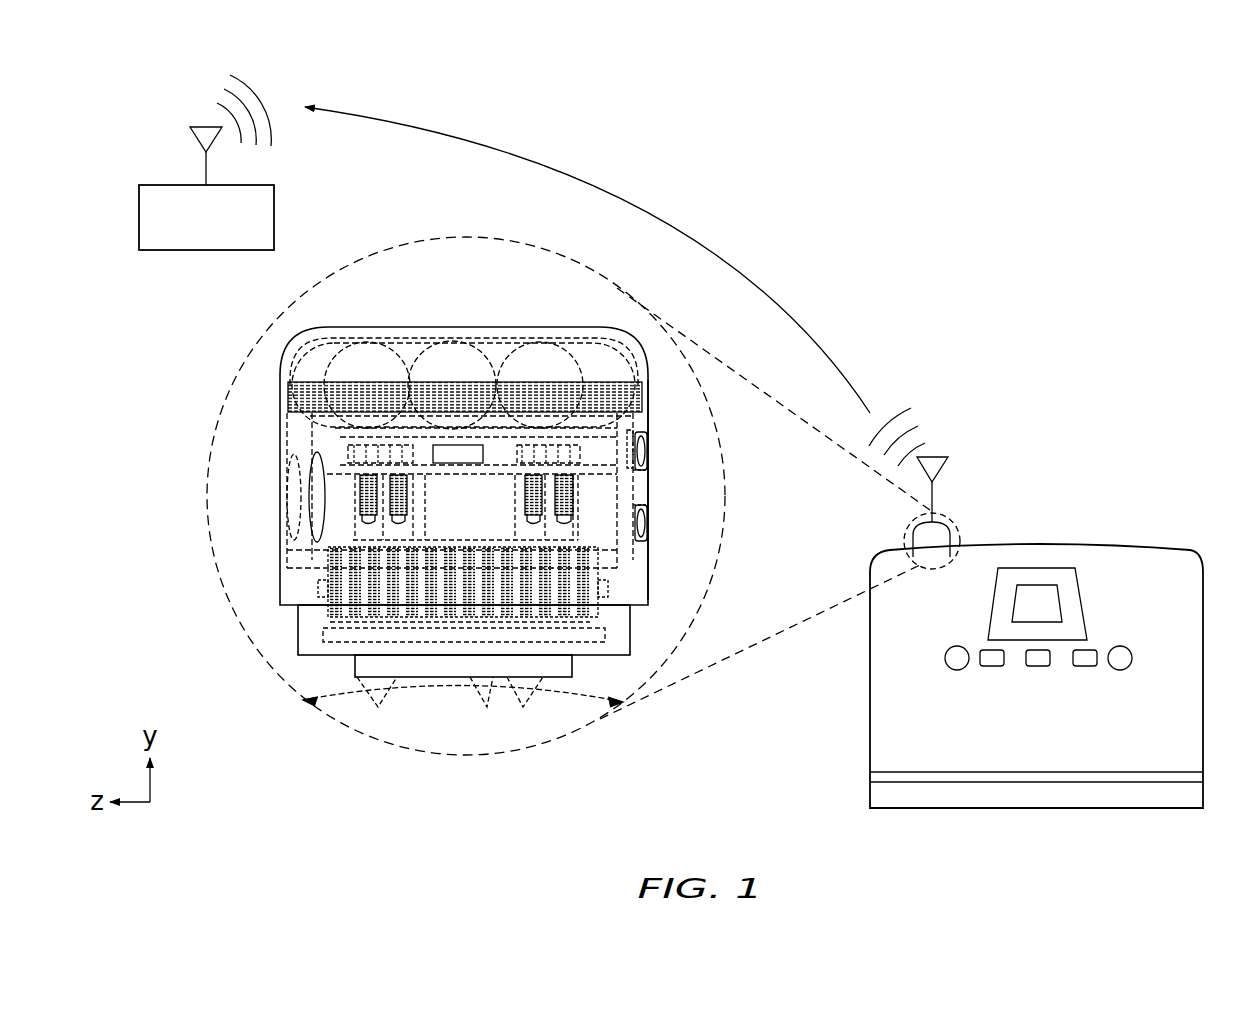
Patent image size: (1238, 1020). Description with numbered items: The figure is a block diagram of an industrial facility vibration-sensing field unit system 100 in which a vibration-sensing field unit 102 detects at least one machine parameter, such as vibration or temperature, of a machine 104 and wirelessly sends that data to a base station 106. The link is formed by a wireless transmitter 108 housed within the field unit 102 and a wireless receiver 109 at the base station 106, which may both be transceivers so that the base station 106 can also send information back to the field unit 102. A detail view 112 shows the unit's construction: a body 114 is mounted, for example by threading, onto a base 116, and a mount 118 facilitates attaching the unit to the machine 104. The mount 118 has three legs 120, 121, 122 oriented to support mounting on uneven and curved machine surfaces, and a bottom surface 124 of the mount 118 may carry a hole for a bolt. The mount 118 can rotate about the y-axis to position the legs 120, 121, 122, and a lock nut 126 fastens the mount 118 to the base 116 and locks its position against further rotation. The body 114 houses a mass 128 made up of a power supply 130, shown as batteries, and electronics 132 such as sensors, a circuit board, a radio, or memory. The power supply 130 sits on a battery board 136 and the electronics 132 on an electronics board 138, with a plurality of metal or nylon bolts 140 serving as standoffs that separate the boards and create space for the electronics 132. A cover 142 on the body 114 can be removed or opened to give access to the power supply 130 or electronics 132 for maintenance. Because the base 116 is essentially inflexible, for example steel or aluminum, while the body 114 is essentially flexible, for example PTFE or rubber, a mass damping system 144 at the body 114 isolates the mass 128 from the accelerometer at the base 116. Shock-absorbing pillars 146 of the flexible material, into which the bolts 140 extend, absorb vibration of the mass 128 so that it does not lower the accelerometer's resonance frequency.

The industrial facility vibration-sensing field unit system 100 is at (1100, 157).
The vibration-sensing field unit 102 is at (448, 318).
The machine 104 is at (1147, 592).
The base station 106 is at (188, 232).
The wireless transmitter 108 is at (940, 462).
The wireless receiver 109 is at (196, 140).
The detail view 112 is at (206, 470).
The body 114 is at (643, 487).
The base 116 is at (603, 613).
The mount 118 is at (348, 665).
The leg 120 is at (368, 706).
The leg 121 is at (492, 720).
The leg 122 is at (537, 707).
The bottom surface 124 is at (407, 684).
The lock nut 126 is at (300, 622).
The mass 128 is at (262, 348).
The power supply 130 is at (485, 348).
The electronics 132 is at (435, 455).
The battery board 136 is at (643, 430).
The electronics board 138 is at (637, 472).
The bolts 140 is at (402, 503).
The cover 142 is at (647, 347).
The mass damping system 144 is at (653, 515).
The shock-absorbing pillars 146 is at (398, 531).